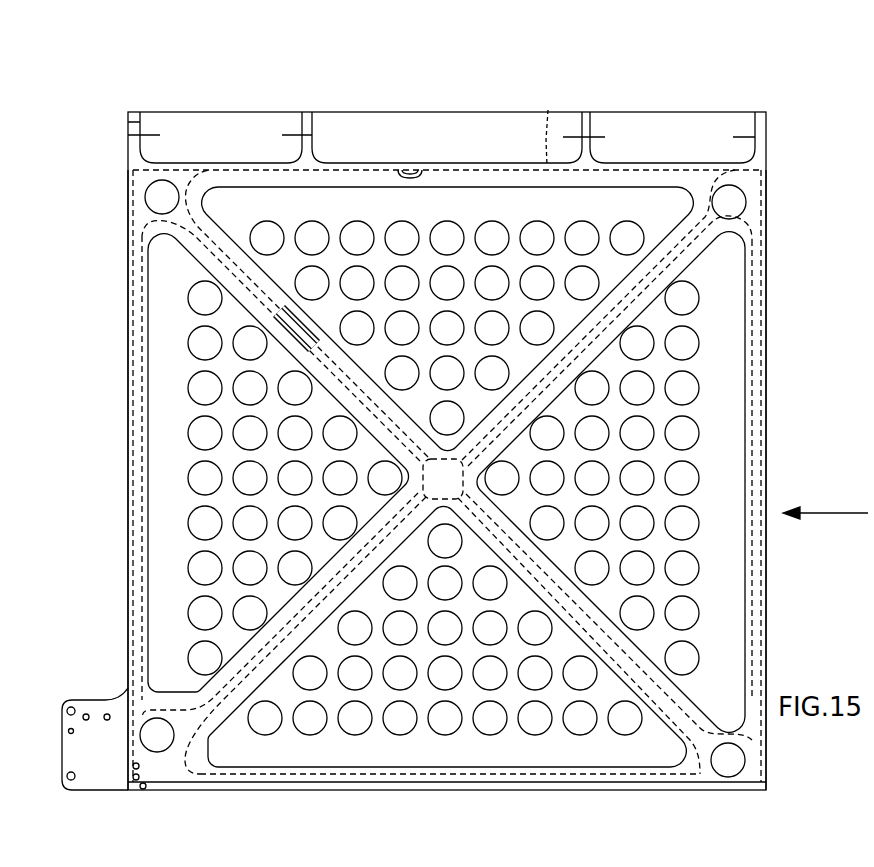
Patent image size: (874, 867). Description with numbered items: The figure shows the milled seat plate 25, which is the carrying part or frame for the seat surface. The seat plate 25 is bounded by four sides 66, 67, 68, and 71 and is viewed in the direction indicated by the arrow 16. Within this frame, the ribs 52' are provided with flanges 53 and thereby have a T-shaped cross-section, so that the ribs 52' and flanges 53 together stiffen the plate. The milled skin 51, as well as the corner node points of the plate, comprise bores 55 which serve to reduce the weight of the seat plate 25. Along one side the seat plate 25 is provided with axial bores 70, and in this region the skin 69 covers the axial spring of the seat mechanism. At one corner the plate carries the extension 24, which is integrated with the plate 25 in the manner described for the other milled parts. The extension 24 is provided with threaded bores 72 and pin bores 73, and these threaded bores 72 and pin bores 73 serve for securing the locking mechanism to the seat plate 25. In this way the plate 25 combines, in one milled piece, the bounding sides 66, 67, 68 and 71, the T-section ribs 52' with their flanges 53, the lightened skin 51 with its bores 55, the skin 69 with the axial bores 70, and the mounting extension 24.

The seat plate 25 is at (783, 95).
The viewing direction arrow 16 is at (827, 499).
The extension 24 is at (72, 748).
The milled skin 51 is at (604, 755).
The ribs 52' is at (287, 223).
The flanges 53 is at (690, 695).
The bores 55 is at (745, 208).
The side 66 is at (130, 462).
The side 67 is at (764, 446).
The side 68 is at (492, 790).
The skin 69 is at (242, 140).
The axial bores 70 is at (160, 135).
The side 71 is at (563, 124).
The threaded bores 72 is at (72, 708).
The pin bores 73 is at (106, 715).